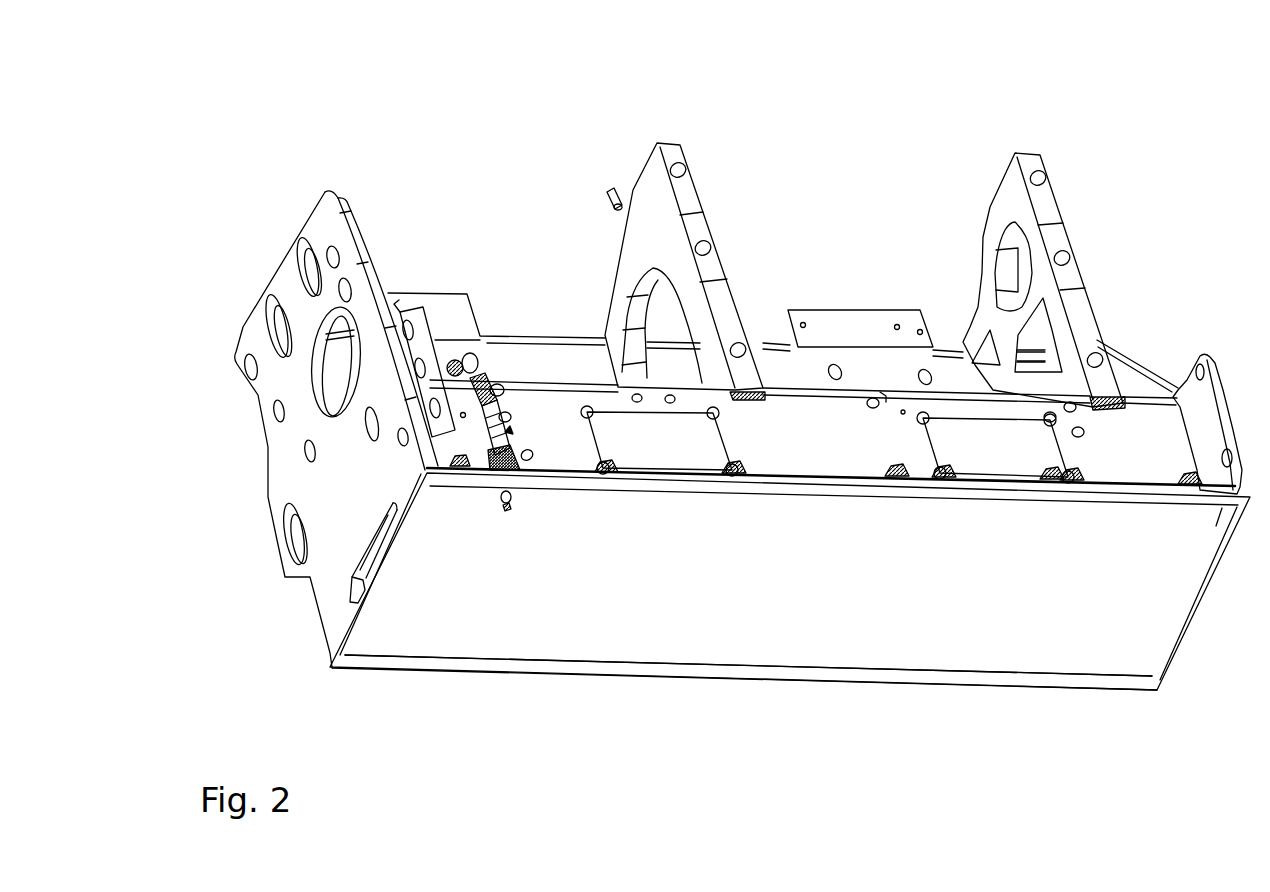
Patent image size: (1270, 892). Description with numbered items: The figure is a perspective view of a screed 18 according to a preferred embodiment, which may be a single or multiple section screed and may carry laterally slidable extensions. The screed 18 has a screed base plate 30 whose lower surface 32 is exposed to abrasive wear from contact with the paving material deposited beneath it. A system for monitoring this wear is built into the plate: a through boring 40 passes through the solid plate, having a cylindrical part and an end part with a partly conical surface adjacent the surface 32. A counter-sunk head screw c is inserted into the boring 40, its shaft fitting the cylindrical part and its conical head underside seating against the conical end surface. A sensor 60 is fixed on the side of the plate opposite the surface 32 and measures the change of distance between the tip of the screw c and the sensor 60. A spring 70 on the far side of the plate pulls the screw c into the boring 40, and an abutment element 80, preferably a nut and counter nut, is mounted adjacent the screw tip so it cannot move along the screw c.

The screed 18 is at (1145, 142).
The screed base plate 30 is at (962, 623).
The surface 32 is at (737, 628).
The through boring 40 is at (507, 512).
The sensor 60 is at (485, 338).
The spring 70 is at (440, 468).
The abutment element 80 is at (480, 432).
The counter-sunk head screw c is at (505, 431).